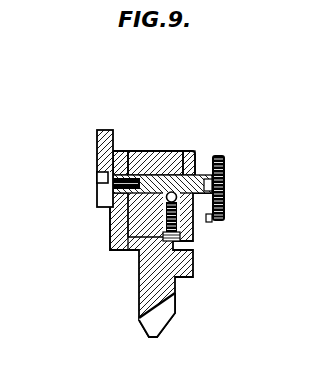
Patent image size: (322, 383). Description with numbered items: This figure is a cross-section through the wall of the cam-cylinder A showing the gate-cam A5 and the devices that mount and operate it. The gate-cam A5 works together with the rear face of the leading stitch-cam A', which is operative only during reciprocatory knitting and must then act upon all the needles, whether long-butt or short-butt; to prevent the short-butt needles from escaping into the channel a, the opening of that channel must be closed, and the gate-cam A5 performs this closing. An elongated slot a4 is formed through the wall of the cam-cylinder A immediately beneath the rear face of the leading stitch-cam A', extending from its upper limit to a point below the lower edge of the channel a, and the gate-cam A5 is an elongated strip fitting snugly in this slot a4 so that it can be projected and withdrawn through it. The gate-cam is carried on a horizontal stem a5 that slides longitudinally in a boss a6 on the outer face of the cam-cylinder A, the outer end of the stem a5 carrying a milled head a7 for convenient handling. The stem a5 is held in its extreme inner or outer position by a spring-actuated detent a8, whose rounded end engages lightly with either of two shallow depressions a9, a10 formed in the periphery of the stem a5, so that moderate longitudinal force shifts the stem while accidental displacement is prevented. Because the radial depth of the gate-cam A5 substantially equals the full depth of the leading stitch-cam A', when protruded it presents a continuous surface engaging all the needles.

The cam-cylinder A is at (123, 148).
The leading stitch-cam A' is at (87, 168).
The channel a is at (97, 176).
The gate-cam A5 is at (125, 185).
The elongated slot a4 is at (110, 212).
The horizontal stem a5 is at (213, 170).
The boss a6 is at (157, 156).
The milled head a7 is at (225, 187).
The spring-actuated detent a8 is at (178, 199).
The shallow depression a9 is at (222, 221).
The shallow depression a10 is at (203, 173).